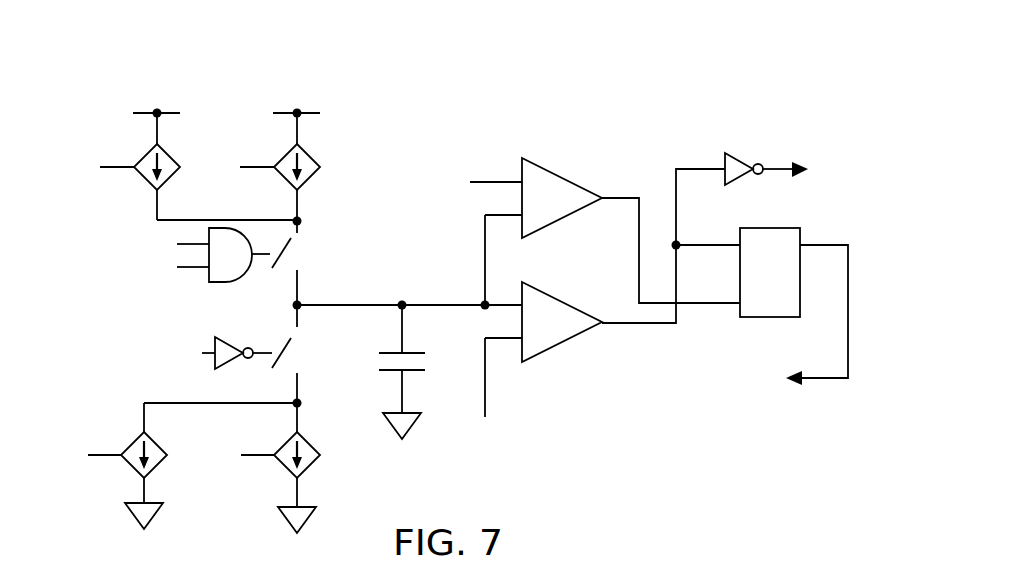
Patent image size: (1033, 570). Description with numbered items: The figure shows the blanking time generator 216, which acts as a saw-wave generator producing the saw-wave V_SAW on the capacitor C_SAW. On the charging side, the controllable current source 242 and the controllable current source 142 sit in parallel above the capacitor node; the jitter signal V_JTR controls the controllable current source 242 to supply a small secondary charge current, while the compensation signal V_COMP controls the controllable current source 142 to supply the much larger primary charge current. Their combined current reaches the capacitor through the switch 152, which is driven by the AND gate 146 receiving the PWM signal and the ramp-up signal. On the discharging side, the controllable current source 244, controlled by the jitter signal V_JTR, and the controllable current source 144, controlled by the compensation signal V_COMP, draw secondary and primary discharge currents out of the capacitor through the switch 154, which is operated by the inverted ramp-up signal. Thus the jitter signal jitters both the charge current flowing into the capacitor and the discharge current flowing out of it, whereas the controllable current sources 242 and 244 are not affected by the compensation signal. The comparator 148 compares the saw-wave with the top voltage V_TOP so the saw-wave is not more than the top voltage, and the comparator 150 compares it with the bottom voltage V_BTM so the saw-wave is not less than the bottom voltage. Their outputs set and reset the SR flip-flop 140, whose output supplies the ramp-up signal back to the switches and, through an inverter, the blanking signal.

The blanking time generator 216 is at (475, 72).
The controllable current source 242 is at (137, 165).
The controllable current source 142 is at (278, 165).
The AND gate 146 is at (250, 264).
The switch 152 is at (306, 263).
The switch 154 is at (233, 354).
The controllable current source 244 is at (129, 466).
The controllable current source 144 is at (268, 468).
The comparator 148 is at (530, 158).
The comparator 150 is at (548, 298).
The SR flip-flop 140 is at (790, 285).